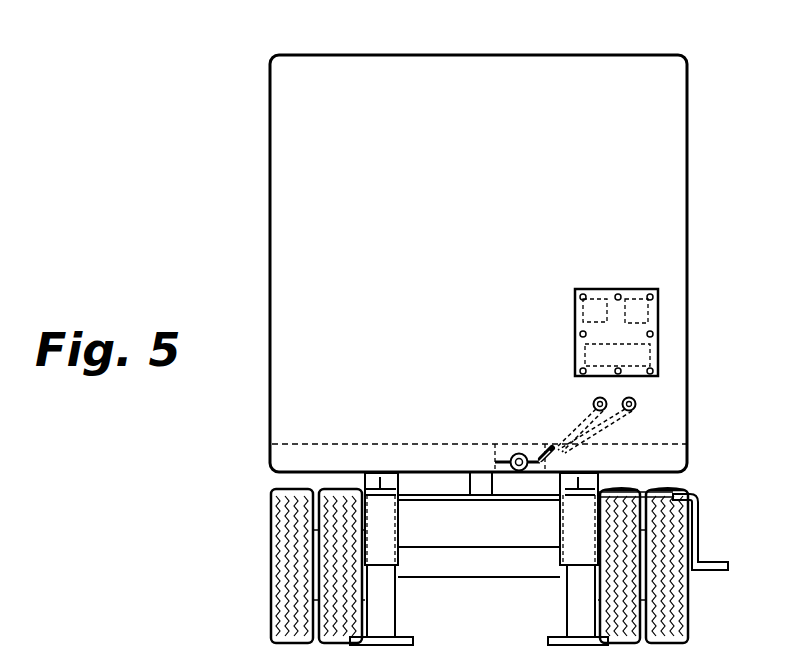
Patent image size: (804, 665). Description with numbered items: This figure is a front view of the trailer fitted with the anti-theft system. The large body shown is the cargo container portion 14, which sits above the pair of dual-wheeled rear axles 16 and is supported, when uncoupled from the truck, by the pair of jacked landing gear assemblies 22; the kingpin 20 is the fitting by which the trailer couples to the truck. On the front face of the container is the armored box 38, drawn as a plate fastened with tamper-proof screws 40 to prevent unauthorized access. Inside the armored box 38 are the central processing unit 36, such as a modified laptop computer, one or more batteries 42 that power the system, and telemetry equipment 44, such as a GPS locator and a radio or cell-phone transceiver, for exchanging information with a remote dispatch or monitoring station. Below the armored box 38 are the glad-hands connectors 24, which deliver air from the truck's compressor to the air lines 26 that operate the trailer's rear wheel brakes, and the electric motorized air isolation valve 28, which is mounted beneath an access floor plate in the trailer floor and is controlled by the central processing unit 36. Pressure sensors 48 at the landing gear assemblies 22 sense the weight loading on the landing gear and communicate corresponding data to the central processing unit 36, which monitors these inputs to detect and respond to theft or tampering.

The cargo container portion 14 is at (584, 64).
The dual-wheeled rear axles 16 is at (465, 568).
The kingpin 20 is at (478, 480).
The jacked landing gear assemblies 22 is at (583, 549).
The glad-hands connectors 24 is at (626, 400).
The air lines 26 is at (555, 454).
The electric motorized air isolation valve 28 is at (548, 462).
The central processing unit 36 is at (598, 296).
The armored box 38 is at (613, 330).
The tamper-proof screws 40 is at (581, 334).
The batteries 42 is at (616, 353).
The telemetry equipment 44 is at (640, 312).
The pressure sensors 48 is at (375, 483).